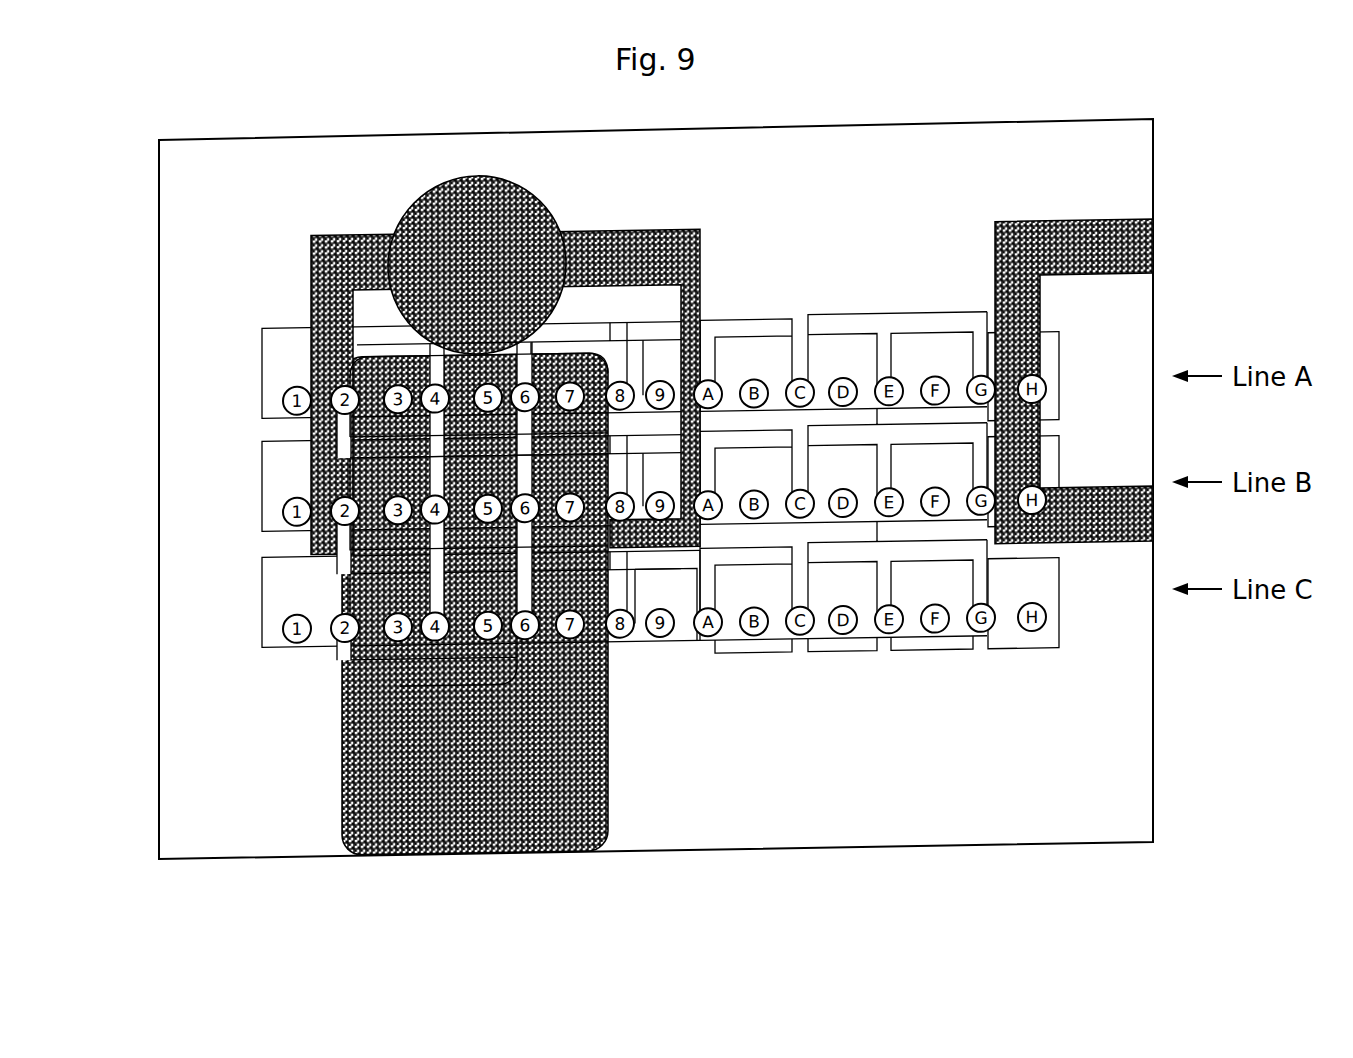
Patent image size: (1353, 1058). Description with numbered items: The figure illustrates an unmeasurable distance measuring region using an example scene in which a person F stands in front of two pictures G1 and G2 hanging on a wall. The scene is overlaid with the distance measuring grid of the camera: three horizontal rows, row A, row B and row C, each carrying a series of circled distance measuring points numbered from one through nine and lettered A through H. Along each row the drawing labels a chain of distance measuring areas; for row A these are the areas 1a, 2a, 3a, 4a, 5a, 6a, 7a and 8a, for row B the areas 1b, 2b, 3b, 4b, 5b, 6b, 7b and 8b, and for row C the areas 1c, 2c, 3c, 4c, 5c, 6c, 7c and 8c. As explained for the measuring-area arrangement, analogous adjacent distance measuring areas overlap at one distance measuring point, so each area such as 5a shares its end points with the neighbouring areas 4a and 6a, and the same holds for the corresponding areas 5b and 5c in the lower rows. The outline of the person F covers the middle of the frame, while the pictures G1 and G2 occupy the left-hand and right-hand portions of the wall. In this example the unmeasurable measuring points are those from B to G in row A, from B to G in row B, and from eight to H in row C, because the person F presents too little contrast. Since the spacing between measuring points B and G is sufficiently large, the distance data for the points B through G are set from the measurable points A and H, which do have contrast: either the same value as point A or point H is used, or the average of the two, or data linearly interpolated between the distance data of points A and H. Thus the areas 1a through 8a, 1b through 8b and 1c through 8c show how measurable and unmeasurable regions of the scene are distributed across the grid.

The line A wiring pattern 1a is at (262, 376).
The line B wiring pattern 1b is at (262, 488).
The line C wiring pattern 1c is at (262, 602).
The line A conductor region 2a is at (345, 433).
The line B conductor region 2b is at (345, 545).
The line C conductor region 2c is at (345, 660).
The line A connecting wire 3a is at (580, 329).
The line B connecting wire 3b is at (613, 647).
The line C connecting wire 3c is at (400, 690).
The line A terminal pattern 4a is at (640, 348).
The line B terminal pattern 4b is at (635, 566).
The line C terminal pattern 4c is at (678, 663).
The line A loop pattern 5a is at (727, 329).
The line B loop pattern 5b is at (727, 569).
The line C loop pattern 5c is at (777, 650).
The line A loop pattern 6a is at (797, 344).
The line B loop pattern 6b is at (833, 551).
The line C loop pattern 6c is at (857, 666).
The line A loop pattern 7a is at (886, 325).
The line B loop pattern 7b is at (921, 540).
The line C loop pattern 7c is at (957, 653).
The line A end pad 8a is at (1062, 388).
The line B end pad 8b is at (1062, 486).
The line C end pad 8c is at (1062, 615).
The person F is at (516, 190).
The picture G1 is at (684, 238).
The picture G2 is at (1030, 235).